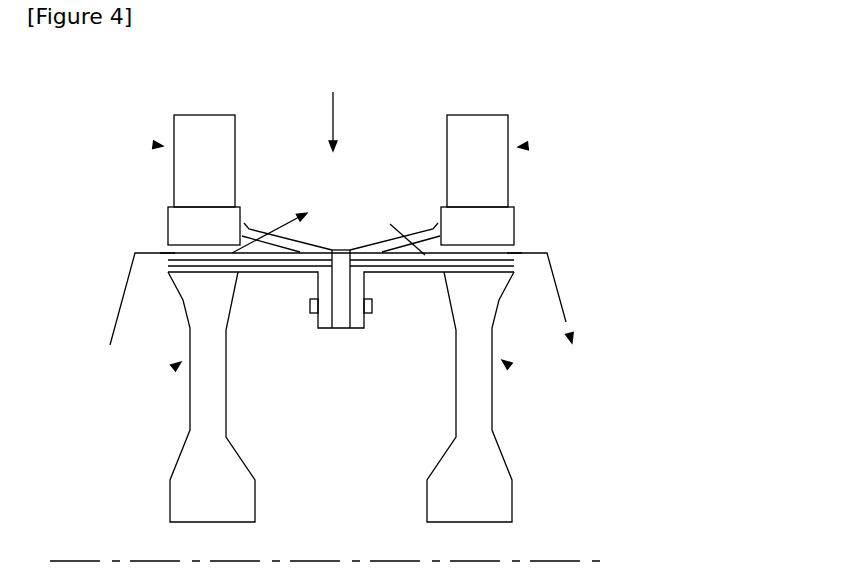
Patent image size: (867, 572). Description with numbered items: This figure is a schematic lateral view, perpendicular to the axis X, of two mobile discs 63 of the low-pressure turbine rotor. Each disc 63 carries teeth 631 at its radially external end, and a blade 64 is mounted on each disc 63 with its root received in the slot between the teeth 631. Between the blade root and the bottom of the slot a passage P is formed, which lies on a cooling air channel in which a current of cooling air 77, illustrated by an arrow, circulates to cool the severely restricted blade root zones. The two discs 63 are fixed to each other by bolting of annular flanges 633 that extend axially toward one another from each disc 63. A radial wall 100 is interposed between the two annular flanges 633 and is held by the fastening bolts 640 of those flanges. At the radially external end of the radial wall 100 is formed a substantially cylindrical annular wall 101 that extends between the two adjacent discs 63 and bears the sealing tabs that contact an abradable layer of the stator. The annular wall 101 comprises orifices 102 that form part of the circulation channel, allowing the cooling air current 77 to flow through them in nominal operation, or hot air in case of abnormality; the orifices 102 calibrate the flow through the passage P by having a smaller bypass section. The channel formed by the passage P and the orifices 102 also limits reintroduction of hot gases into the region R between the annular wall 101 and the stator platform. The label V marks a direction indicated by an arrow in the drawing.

The blade 64 is at (155, 146).
The teeth of the disc 631 is at (198, 218).
The disc 63 is at (176, 366).
The annular flange 633 is at (277, 273).
The fastening bolt 640 is at (313, 313).
The radial wall 100 is at (340, 330).
The annular wall 101 is at (362, 247).
The orifice 102 is at (262, 250).
The cooling air current 77 is at (125, 288).
The passage P is at (165, 249).
The vertical direction V is at (334, 109).
The region R is at (328, 210).
The axis X is at (331, 546).